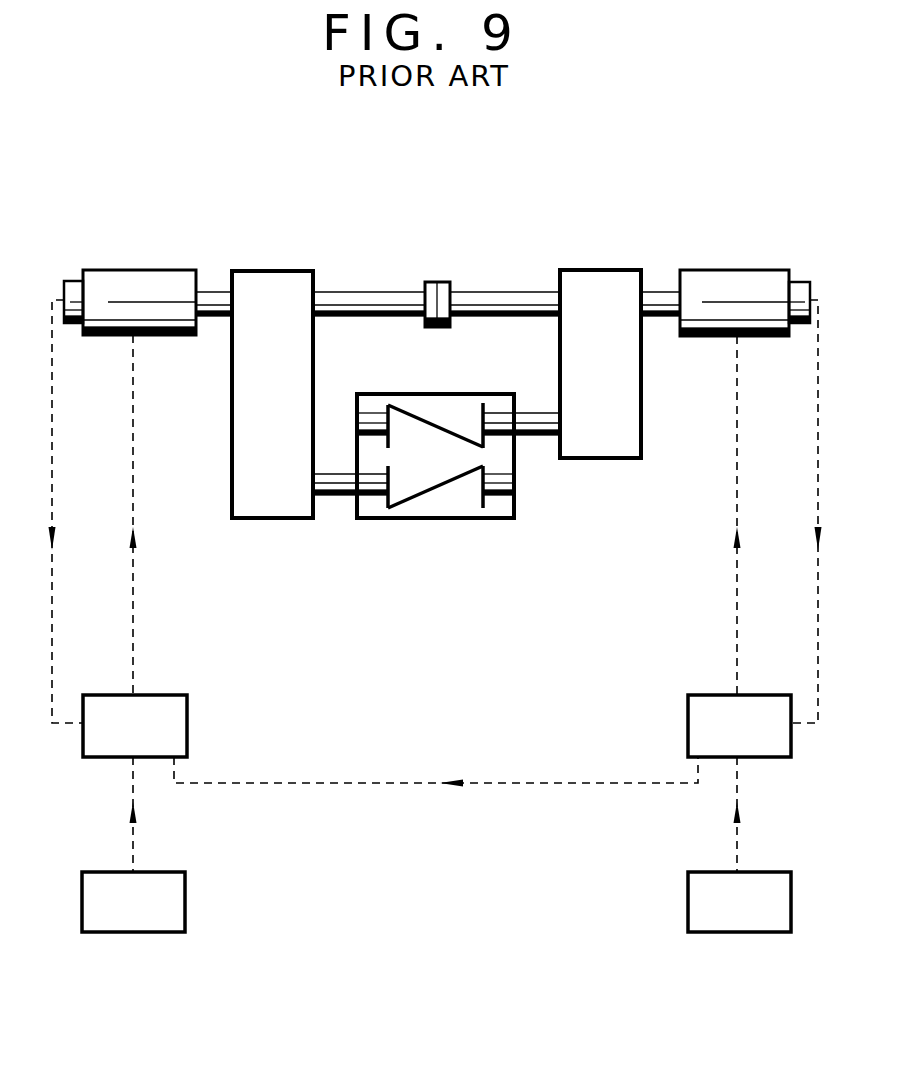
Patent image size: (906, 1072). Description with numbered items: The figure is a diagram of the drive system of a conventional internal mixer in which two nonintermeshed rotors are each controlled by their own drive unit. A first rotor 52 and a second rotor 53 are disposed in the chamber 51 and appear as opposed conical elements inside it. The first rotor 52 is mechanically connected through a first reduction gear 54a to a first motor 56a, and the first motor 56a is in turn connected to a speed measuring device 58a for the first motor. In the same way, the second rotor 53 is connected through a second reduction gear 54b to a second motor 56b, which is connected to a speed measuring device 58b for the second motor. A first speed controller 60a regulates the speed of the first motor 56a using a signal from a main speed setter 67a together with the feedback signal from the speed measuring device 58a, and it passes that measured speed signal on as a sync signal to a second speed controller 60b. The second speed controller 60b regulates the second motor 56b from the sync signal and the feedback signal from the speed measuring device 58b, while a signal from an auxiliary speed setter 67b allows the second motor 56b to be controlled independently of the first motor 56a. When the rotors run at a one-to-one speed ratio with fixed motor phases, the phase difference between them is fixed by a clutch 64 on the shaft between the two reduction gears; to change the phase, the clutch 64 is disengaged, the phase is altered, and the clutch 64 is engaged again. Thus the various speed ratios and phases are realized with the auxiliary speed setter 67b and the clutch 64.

The chamber 51 is at (398, 394).
The first rotor 52 is at (442, 428).
The second rotor 53 is at (440, 487).
The first reduction gear 54a is at (603, 459).
The second reduction gear 54b is at (274, 520).
The first motor 56a is at (730, 270).
The second motor 56b is at (172, 270).
The speed measuring device for the first motor 58a is at (803, 282).
The speed measuring device for the second motor 58b is at (73, 281).
The first speed controller 60a is at (707, 695).
The second speed controller 60b is at (176, 695).
The clutch 64 is at (437, 282).
The main speed setter 67a is at (707, 872).
The auxiliary speed setter 67b is at (170, 872).